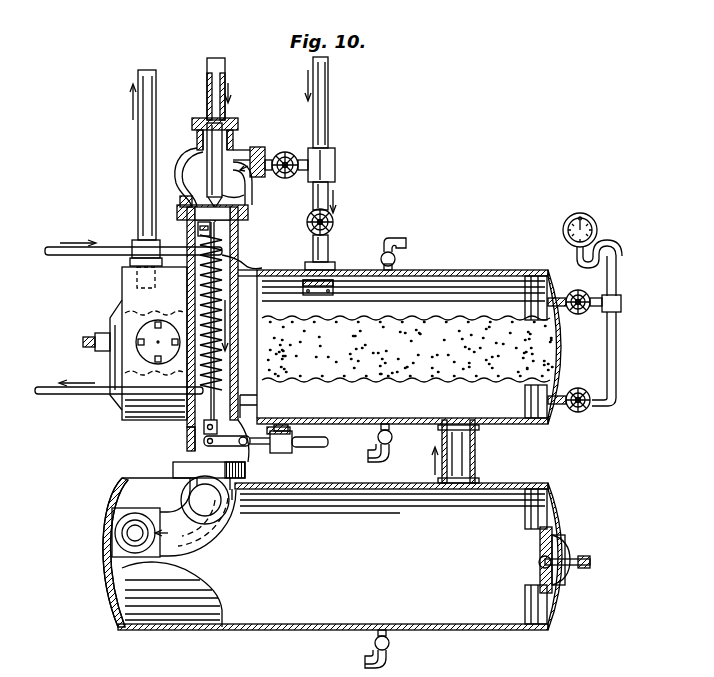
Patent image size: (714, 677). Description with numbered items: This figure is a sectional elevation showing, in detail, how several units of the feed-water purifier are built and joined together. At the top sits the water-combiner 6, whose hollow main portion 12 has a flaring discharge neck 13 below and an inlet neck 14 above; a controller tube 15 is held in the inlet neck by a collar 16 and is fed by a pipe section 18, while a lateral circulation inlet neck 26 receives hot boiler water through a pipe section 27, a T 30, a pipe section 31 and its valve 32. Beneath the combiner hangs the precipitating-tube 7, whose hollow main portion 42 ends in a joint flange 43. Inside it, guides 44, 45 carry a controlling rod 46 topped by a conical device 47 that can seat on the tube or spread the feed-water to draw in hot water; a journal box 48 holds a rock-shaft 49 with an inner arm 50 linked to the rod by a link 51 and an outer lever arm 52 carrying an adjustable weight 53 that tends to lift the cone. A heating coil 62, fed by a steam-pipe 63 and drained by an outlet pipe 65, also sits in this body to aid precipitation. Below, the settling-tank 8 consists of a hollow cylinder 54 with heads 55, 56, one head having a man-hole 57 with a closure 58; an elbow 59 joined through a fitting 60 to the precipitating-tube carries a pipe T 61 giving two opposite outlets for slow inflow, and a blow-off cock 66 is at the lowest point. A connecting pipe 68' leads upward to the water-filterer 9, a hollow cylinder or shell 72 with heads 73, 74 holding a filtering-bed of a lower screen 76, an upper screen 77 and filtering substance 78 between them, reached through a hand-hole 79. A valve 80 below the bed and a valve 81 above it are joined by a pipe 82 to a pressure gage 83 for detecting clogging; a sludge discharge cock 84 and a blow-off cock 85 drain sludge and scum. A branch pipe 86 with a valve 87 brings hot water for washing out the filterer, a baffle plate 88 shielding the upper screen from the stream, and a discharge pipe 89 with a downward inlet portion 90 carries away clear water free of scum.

The water-combiner 6 is at (180, 160).
The precipitating-tube 7 is at (242, 251).
The settling-tank 8 is at (190, 632).
The upper tank 9 is at (475, 268).
The hollow main portion 12 is at (237, 150).
The flaring discharge neck 13 is at (186, 200).
The inlet neck 14 is at (197, 140).
The controller tube 15 is at (222, 175).
The collar 16 is at (226, 124).
The pipe section 18 is at (207, 82).
The lateral circulation inlet neck 26 is at (258, 147).
The pipe section 27 is at (328, 104).
The T 30 is at (335, 154).
The pipe section 31 is at (285, 152).
The valve 32 is at (247, 195).
The hollow main portion 42 is at (198, 229).
The joint flange 43 is at (173, 466).
The guide 44 is at (233, 218).
The guide 45 is at (226, 396).
The controlling rod 46 is at (259, 258).
The conical device 47 is at (249, 198).
The journal box 48 is at (280, 427).
The rock-shaft 49 is at (247, 446).
The arm 50 is at (204, 441).
The link 51 is at (187, 434).
The lever arm 52 is at (318, 448).
The weight 53 is at (281, 453).
The hollow cylinder 54 is at (205, 627).
The head 55 is at (106, 593).
The head 56 is at (557, 608).
The man-hole 57 is at (566, 543).
The closure 58 is at (562, 565).
The elbow 59 is at (212, 542).
The fitting 60 is at (200, 492).
The pipe T 61 is at (112, 533).
The heating coil 62 is at (122, 297).
The steam-pipe 63 is at (52, 247).
The outlet pipe 65 is at (45, 387).
The blow-off cock 66 is at (389, 649).
The connecting pipe 68' is at (473, 451).
The hollow cylinder or shell 72 is at (495, 290).
The head 73 is at (120, 404).
The head 74 is at (562, 346).
The screen 76 is at (446, 380).
The screen 77 is at (436, 318).
The filtering substance 78 is at (410, 372).
The hand-hole 79 is at (150, 340).
The valve 80 is at (580, 412).
The valve 81 is at (575, 290).
The pipe 82 is at (617, 348).
The pressure gage 83 is at (563, 230).
The sludge discharge cock 84 is at (378, 438).
The blow-off cock 85 is at (397, 240).
The branch pipe 86 is at (307, 222).
The valve 87 is at (333, 223).
The baffle plate 88 is at (325, 282).
The discharge pipe 89 is at (138, 190).
The inlet portion 90 is at (137, 273).